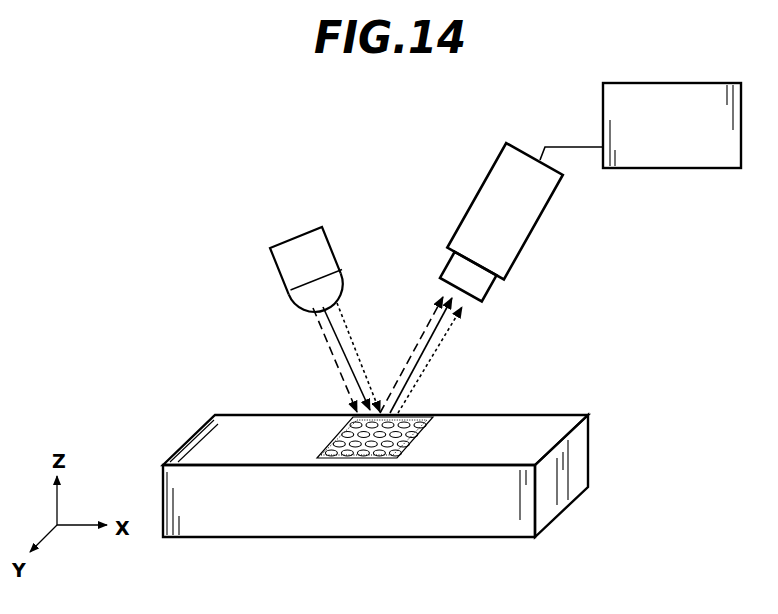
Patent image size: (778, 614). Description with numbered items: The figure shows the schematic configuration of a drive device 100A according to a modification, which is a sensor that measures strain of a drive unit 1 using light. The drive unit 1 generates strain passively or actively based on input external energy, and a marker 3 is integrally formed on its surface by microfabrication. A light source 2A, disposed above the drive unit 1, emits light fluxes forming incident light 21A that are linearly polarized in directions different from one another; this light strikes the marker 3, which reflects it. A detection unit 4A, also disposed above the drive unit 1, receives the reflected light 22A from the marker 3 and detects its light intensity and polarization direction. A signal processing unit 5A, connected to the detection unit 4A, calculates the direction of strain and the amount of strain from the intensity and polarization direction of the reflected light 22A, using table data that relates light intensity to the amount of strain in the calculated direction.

The drive unit 1 is at (455, 527).
The marker 3 is at (338, 445).
The drive device 100A is at (372, 173).
The light source 2A is at (285, 270).
The incident light 21A is at (347, 323).
The reflected light 22A is at (430, 325).
The detection unit 4A is at (515, 232).
The signal processing unit 5A is at (677, 97).